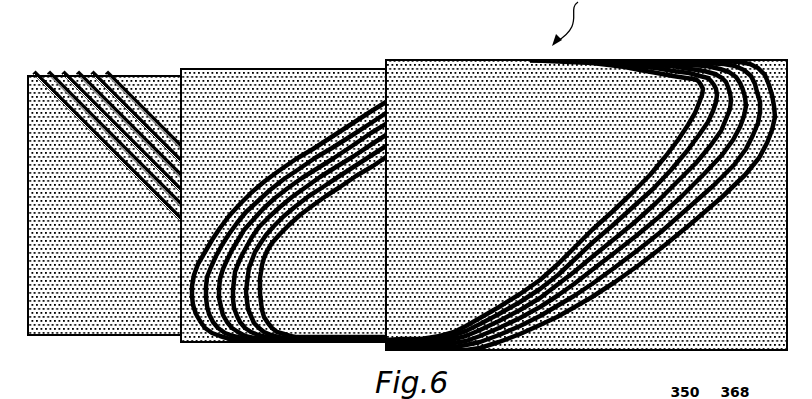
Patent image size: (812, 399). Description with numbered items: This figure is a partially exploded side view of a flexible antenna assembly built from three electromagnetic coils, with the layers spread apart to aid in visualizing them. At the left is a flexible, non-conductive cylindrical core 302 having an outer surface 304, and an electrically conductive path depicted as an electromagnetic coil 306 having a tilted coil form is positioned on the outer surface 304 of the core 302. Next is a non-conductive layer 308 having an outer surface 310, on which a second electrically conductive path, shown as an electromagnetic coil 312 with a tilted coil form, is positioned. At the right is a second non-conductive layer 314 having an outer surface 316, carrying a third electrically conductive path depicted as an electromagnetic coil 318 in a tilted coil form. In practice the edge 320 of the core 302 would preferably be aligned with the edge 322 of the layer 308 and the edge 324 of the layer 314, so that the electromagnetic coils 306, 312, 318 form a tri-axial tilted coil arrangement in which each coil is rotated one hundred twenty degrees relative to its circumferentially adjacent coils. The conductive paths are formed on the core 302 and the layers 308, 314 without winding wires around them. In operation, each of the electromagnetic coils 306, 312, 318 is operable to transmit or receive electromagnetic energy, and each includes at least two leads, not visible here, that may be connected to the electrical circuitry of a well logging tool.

The flexible, non-conductive cylindrical core 302 is at (78, 328).
The outer surface of core 304 is at (143, 328).
The electromagnetic coil 306 is at (82, 75).
The non-conductive layer 308 is at (214, 75).
The outer surface of layer 310 is at (294, 72).
The electromagnetic coil 312 is at (207, 328).
The second non-conductive layer 314 is at (425, 75).
The outer surface of second layer 316 is at (505, 73).
The electromagnetic coil 318 is at (719, 60).
The edge of core 320 is at (27, 309).
The edge of layer 322 is at (178, 319).
The edge of second layer 324 is at (384, 330).